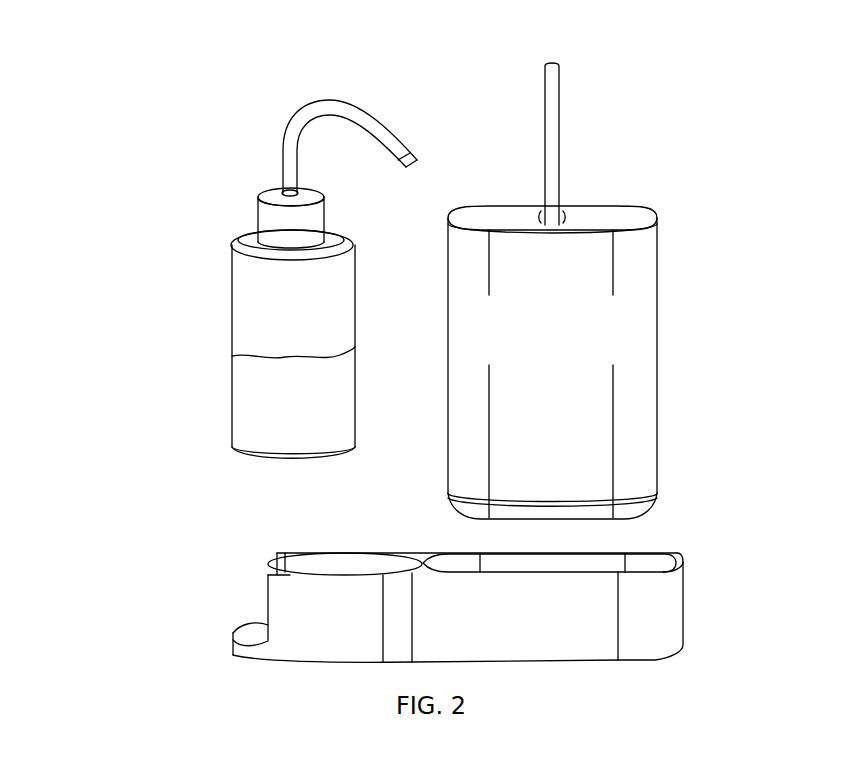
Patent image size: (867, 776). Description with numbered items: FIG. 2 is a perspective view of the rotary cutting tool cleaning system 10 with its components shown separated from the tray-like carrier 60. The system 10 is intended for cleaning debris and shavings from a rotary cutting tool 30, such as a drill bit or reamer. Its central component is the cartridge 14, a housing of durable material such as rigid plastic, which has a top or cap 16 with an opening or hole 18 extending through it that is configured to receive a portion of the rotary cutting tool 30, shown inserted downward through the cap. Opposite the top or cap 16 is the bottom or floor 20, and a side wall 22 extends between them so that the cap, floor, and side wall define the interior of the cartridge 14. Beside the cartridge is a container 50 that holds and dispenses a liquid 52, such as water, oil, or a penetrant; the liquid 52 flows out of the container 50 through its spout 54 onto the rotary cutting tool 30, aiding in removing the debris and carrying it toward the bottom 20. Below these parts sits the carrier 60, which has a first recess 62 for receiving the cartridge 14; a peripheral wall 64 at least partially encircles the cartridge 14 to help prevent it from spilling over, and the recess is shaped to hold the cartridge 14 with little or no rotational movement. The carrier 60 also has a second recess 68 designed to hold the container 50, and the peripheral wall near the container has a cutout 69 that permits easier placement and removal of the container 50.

The rotary cutting tool cleaning system 10 is at (113, 217).
The cartridge 14 is at (710, 242).
The top or cap 16 is at (633, 213).
The opening or hole 18 is at (542, 225).
The bottom or floor 20 is at (652, 507).
The side wall 22 is at (657, 283).
The rotary cutting tool 30 is at (558, 97).
The container 50 is at (232, 330).
The liquid 52 is at (258, 358).
The spout 54 is at (353, 110).
The carrier 60 is at (653, 658).
The first recess 62 is at (452, 562).
The peripheral wall 64 is at (683, 597).
The second recess 68 is at (297, 565).
The cutout 69 is at (235, 633).